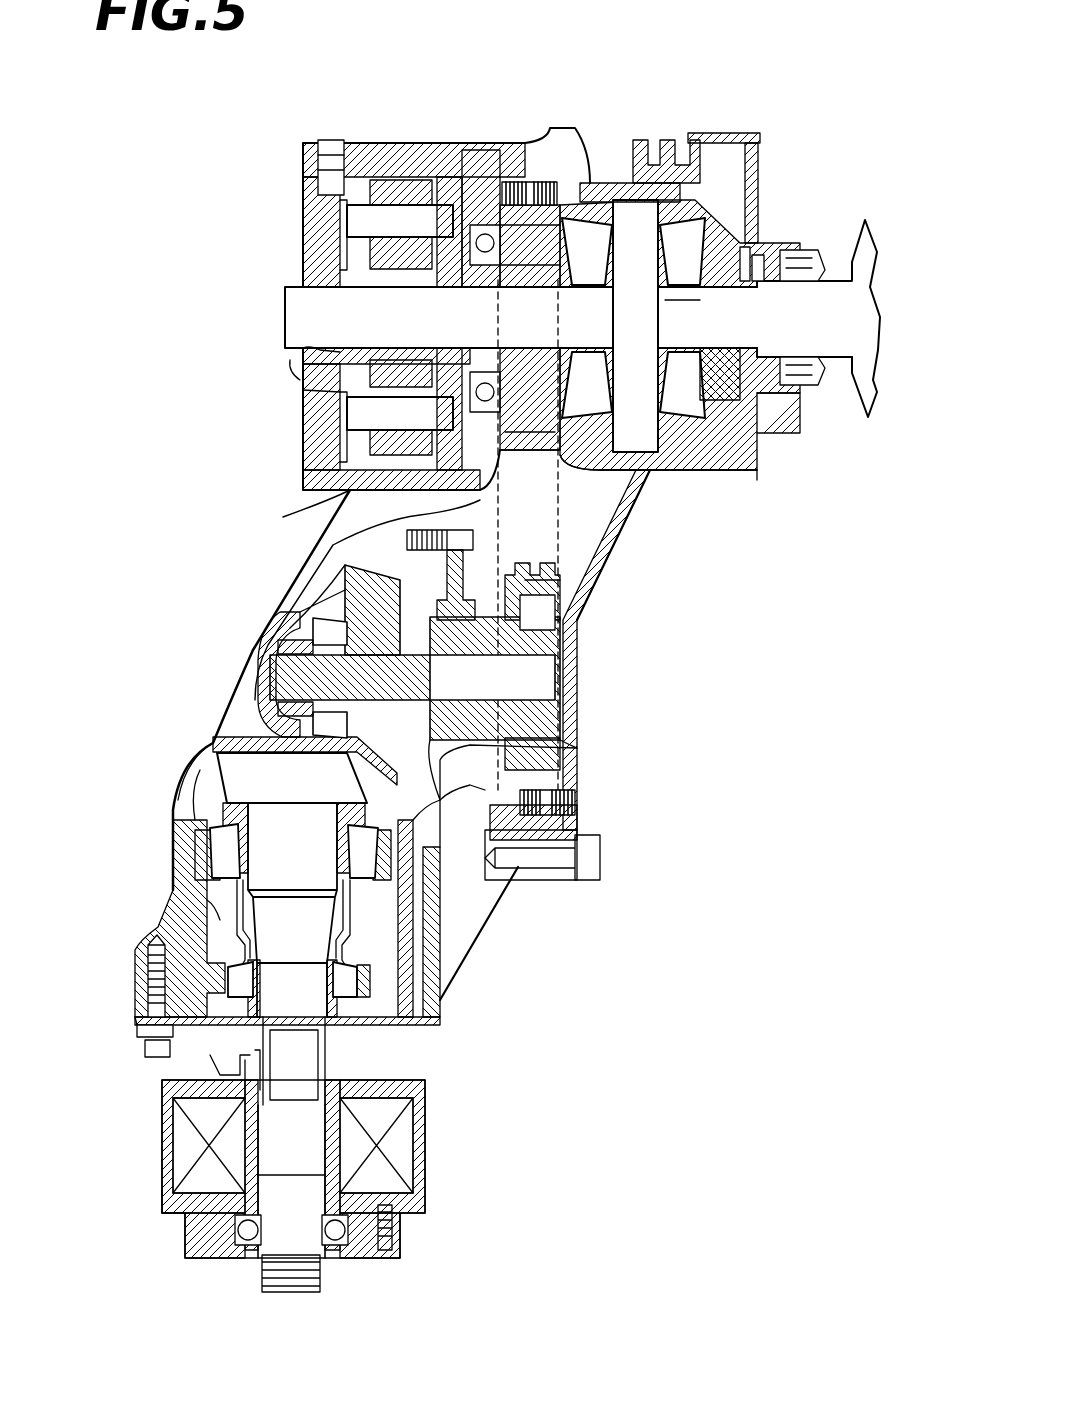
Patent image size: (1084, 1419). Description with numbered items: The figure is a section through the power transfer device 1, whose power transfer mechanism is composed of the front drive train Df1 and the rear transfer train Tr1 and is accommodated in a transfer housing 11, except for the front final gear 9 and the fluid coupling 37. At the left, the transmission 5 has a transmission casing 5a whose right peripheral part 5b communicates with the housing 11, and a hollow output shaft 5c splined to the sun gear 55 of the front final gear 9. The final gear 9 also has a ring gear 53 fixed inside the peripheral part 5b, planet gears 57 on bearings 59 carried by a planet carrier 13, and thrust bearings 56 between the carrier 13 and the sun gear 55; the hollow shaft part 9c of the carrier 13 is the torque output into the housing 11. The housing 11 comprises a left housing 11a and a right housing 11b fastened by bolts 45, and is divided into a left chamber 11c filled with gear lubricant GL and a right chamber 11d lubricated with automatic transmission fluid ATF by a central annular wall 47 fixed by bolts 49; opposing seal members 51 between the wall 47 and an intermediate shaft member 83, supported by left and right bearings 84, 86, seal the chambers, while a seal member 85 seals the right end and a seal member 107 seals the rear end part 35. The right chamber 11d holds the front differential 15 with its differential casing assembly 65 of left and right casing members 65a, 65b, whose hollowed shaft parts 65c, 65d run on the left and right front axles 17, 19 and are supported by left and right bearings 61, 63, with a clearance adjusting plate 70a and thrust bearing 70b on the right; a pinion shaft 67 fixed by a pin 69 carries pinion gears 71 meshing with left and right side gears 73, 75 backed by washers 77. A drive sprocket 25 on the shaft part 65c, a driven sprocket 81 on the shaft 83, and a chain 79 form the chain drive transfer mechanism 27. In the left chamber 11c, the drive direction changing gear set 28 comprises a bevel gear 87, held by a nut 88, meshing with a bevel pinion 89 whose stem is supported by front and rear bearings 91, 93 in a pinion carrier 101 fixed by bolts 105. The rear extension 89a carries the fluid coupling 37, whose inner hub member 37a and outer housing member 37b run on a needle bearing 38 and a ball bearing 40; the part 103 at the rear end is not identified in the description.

The power transfer device 1 is at (740, 700).
The transmission 5 is at (290, 248).
The transmission casing 5a is at (338, 143).
The right peripheral part 5b is at (398, 143).
The output shaft 5c is at (300, 290).
The front final gear 9 is at (455, 160).
The shaft part 9c is at (520, 290).
The transfer housing 11 is at (545, 882).
The left housing 11a is at (540, 890).
The right housing 11b is at (577, 800).
The left chamber 11c is at (200, 805).
The right chamber 11d is at (480, 920).
The planet carrier 13 is at (460, 160).
The front differential 15 is at (695, 205).
The left front axle 17 is at (482, 331).
The right front axle 19 is at (804, 331).
The drive sprocket 25 is at (530, 432).
The chain drive transfer mechanism 27 is at (577, 828).
The drive direction changing gear set 28 is at (403, 800).
The rear end part 35 is at (135, 985).
The fluid coupling 37 is at (428, 1120).
The inner hub member 37a is at (268, 1135).
The outer housing member 37b is at (165, 1205).
The needle bearing 38 is at (250, 1040).
The ball bearing 40 is at (300, 1245).
The bolts 45 is at (600, 858).
The central annular wall 47 is at (490, 828).
The bolts 49 is at (550, 555).
The seal members 51 is at (470, 720).
The ring gear 53 is at (348, 497).
The sun gear 55 is at (390, 282).
The thrust bearings 56 is at (435, 285).
The planet gears 57 is at (310, 392).
The bearings 59 is at (370, 428).
The left bearing 61 is at (610, 290).
The right bearing 63 is at (790, 395).
The differential casing assembly 65 is at (585, 210).
The left differential casing member 65a is at (620, 470).
The right differential casing member 65b is at (680, 470).
The hollowed shaft part 65c is at (530, 182).
The hollowed shaft part 65d is at (800, 262).
The pinion shaft 67 is at (660, 318).
The pin 69 is at (620, 183).
The clearance adjusting plate 70a is at (748, 250).
The thrust bearing 70b is at (760, 260).
The pinion gears 71 is at (645, 440).
The left side gear 73 is at (555, 270).
The right side gear 75 is at (705, 290).
The washers 77 is at (725, 290).
The chain 79 is at (605, 560).
The driven sprocket 81 is at (570, 585).
The intermediate shaft member 83 is at (545, 680).
The left bearing 84 is at (258, 640).
The seal member 85 is at (868, 300).
The right bearing 86 is at (545, 612).
The bevel gear 87 is at (345, 590).
The nut 88 is at (278, 655).
The bevel pinion 89 is at (230, 752).
The rear extension 89a is at (305, 1200).
The front bearing 91 is at (205, 850).
The rear bearing 93 is at (172, 942).
The pinion carrier 101 is at (175, 903).
The nut 103 is at (262, 1285).
The bolts 105 is at (137, 1030).
The seal member 107 is at (235, 1068).
The gear lubricant GL is at (560, 745).
The automatic transmission fluid ATF is at (577, 770).
The front drive train Df1 is at (668, 105).
The rear transfer train Tr1 is at (215, 628).